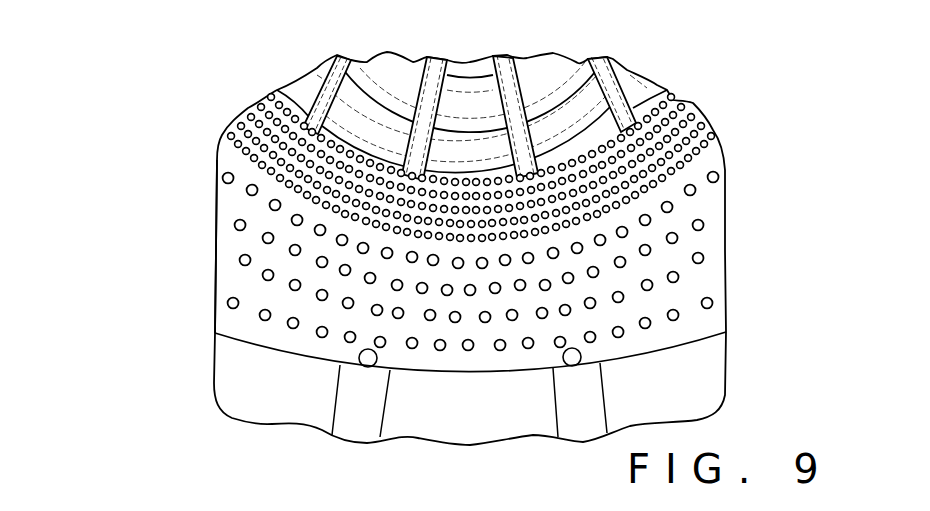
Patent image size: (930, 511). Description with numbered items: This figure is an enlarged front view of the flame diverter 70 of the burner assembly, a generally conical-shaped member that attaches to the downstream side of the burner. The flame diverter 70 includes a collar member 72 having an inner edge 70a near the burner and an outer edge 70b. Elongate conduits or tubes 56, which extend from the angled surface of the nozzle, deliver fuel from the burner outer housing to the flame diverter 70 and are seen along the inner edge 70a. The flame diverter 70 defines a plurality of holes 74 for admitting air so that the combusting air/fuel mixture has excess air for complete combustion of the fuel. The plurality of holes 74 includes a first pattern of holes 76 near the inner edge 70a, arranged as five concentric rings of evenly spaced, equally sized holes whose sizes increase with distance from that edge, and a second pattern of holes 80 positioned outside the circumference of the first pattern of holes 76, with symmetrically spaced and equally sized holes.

The elongate conduit 56 is at (430, 97).
The flame diverter 70 is at (752, 153).
The inner edge 70a is at (593, 133).
The outer edge 70b is at (680, 347).
The collar member 72 is at (230, 200).
The plurality of holes 74 is at (682, 208).
The first pattern of holes 76 is at (673, 120).
The second pattern of holes 80 is at (673, 260).